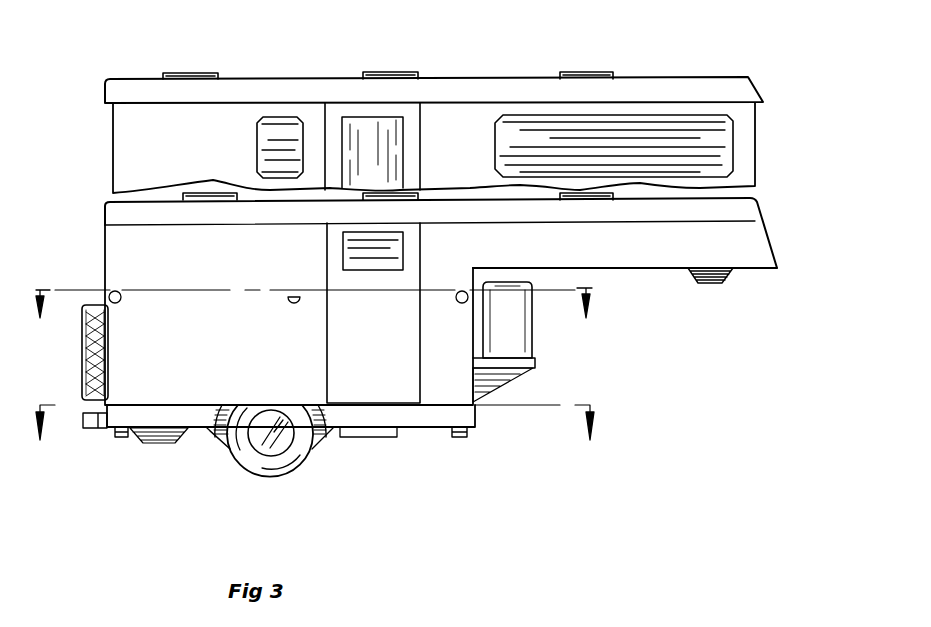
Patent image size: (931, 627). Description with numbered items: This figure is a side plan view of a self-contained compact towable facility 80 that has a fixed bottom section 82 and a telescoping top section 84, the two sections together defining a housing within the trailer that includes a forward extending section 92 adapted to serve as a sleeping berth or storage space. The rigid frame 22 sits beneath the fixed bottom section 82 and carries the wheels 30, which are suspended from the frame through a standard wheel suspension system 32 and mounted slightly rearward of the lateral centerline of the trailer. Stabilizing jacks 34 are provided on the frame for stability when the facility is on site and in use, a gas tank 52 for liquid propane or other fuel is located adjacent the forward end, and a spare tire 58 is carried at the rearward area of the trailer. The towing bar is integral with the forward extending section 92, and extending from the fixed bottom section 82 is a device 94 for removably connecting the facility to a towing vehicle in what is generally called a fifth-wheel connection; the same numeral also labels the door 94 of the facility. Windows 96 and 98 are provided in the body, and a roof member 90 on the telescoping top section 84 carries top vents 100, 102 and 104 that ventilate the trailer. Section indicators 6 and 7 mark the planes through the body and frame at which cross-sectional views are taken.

The rigid frame 22 is at (427, 429).
The wheels 30 is at (312, 455).
The wheel suspension system 32 is at (217, 440).
The stabilizing jacks 34 is at (121, 438).
The gas tank 52 is at (533, 344).
The spare tire 58 is at (82, 352).
The section line 6- 6 is at (310, 317).
The section line 7- 7 is at (312, 437).
The towable facility 80 is at (716, 72).
The fixed bottom section 82 is at (105, 252).
The telescoping top section 84 is at (757, 140).
The roof member 90 is at (757, 80).
The forward extending section 92 is at (757, 268).
The door 94 is at (421, 153).
The window 96 is at (495, 127).
The window 98 is at (257, 146).
The top vent 100 is at (585, 71).
The top vent 102 is at (388, 71).
The top vent 104 is at (180, 72).